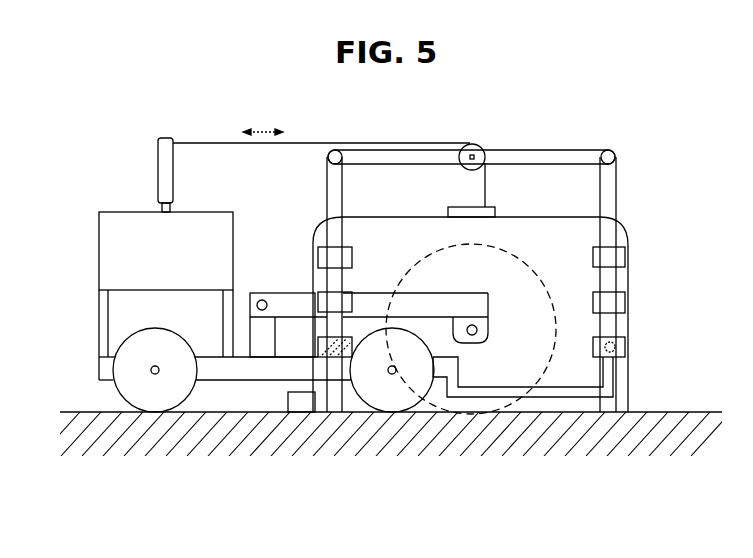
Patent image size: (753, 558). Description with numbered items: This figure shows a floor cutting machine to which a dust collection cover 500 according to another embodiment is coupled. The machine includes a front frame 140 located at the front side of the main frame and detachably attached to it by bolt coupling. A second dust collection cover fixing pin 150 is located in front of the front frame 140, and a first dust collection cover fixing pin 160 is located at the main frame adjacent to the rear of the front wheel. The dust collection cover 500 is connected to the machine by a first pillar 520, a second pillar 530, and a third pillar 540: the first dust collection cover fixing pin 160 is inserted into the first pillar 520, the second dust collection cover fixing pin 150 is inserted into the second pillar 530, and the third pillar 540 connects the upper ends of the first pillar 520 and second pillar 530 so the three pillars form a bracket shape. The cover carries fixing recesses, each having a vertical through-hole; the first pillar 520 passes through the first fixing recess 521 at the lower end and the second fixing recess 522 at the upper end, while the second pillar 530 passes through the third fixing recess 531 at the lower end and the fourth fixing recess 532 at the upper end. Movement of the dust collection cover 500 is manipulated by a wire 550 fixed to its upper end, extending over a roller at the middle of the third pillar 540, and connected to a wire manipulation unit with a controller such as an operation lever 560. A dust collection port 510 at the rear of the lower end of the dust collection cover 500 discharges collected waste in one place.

The front frame 140 is at (550, 400).
The second dust collection cover fixing pin 150 is at (627, 347).
The first dust collection cover fixing pin 160 is at (333, 357).
The dust collection cover 500 is at (630, 320).
The dust collection port 510 is at (297, 412).
The first pillar 520 is at (343, 190).
The first fixing recess 521 is at (318, 298).
The second fixing recess 522 is at (318, 257).
The second pillar 530 is at (617, 183).
The third fixing recess 531 is at (627, 300).
The fourth fixing recess 532 is at (627, 257).
The third pillar 540 is at (522, 150).
The wire 550 is at (215, 141).
The operation lever 560 is at (175, 175).